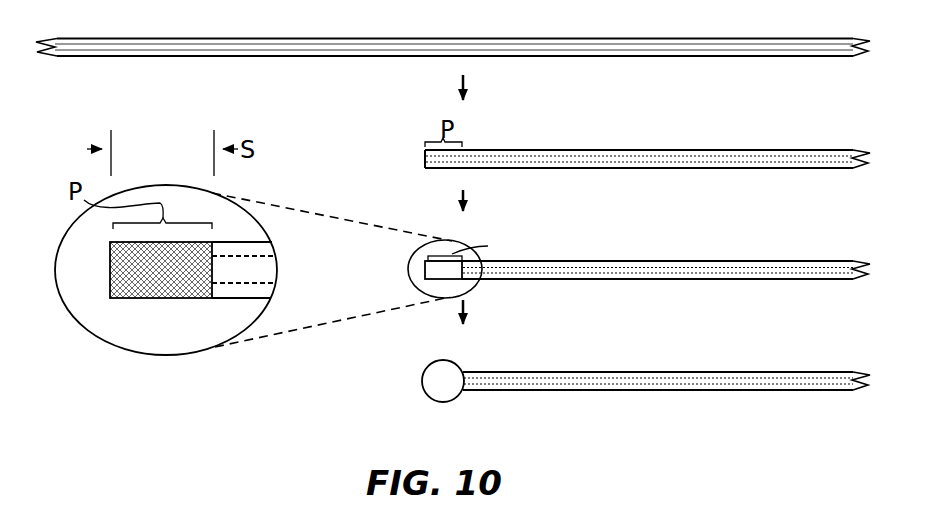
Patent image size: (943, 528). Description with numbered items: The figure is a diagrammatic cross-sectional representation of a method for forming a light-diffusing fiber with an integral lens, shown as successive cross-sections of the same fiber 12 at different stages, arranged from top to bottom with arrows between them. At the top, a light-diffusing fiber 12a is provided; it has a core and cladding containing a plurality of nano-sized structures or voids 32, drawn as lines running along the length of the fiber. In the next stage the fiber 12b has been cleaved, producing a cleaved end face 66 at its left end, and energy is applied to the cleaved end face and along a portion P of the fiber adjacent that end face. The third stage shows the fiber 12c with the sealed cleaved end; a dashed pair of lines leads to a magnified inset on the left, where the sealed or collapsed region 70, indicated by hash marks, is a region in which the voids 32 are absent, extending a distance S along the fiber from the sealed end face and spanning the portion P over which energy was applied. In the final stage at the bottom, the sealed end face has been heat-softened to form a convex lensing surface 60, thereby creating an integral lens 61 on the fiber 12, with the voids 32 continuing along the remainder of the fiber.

The light-diffusing fiber 12 is at (778, 392).
The light-diffusing fiber (as provided) 12a is at (762, 58).
The light-diffusing fiber (cleaved) 12b is at (762, 170).
The light-diffusing fiber (sealed) 12c is at (785, 280).
The nano-sized structures (voids) 32 is at (550, 52).
The convex lensing surface 60 is at (405, 382).
The integral lens 61 is at (435, 386).
The cleaved end face 66 is at (410, 158).
The sealed region 70 is at (178, 284).